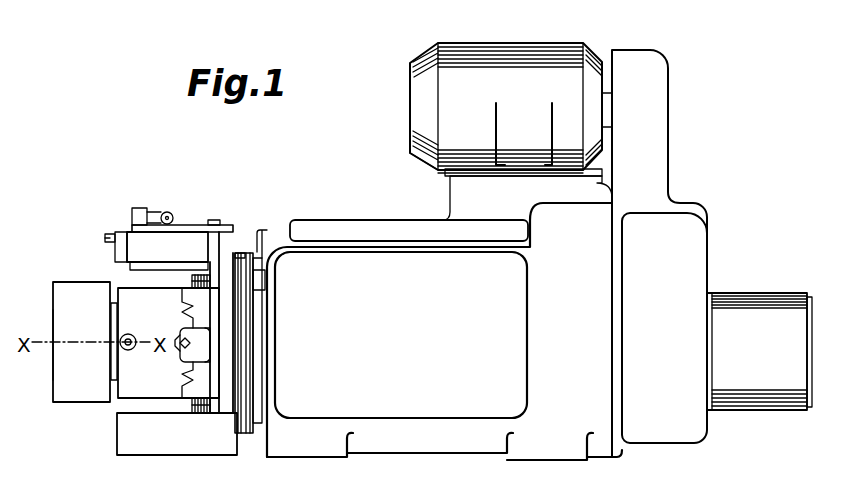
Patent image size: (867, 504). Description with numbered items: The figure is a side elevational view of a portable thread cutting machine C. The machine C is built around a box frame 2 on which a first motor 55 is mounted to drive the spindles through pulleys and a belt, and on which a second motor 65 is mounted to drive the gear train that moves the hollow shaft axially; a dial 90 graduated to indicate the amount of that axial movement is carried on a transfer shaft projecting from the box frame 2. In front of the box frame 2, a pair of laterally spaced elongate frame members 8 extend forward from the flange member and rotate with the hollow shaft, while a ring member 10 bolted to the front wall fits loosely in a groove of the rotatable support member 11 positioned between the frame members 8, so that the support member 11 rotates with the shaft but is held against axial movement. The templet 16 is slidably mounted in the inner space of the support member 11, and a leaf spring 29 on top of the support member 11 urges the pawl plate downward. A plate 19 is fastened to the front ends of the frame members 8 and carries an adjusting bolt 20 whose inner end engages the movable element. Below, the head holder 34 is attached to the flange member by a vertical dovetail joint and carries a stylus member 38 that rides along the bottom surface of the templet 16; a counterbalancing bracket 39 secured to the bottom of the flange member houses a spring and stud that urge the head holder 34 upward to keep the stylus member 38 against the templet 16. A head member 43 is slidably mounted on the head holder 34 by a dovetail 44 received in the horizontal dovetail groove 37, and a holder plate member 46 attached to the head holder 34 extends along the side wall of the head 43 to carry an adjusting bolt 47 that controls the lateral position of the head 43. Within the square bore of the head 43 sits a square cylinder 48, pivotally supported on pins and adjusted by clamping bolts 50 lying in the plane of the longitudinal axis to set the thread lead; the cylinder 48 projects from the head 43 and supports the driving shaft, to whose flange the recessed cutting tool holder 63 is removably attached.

The box frame 2 is at (360, 252).
The frame members 8 is at (183, 237).
The ring member 10 is at (248, 256).
The rotatable support member 11 is at (223, 228).
The templet 16 is at (143, 273).
The plate 19 is at (125, 232).
The adjusting bolt 20 is at (108, 237).
The leaf spring 29 is at (149, 208).
The head holder 34 is at (214, 318).
The dovetail groove 37 is at (193, 322).
The stylus member 38 is at (202, 290).
The counterbalancing bracket 39 is at (210, 450).
The head member 43 is at (111, 371).
The dovetail 44 is at (187, 320).
The holder plate member 46 is at (210, 358).
The adjusting bolt 47 is at (180, 348).
The square cylinder 48 is at (115, 357).
The clamping bolt 50 is at (118, 340).
The first motor 55 is at (533, 43).
The cutting tool holder 63 is at (57, 303).
The second motor 65 is at (748, 300).
The dial 90 is at (266, 280).
The thread cutting machine C is at (420, 219).